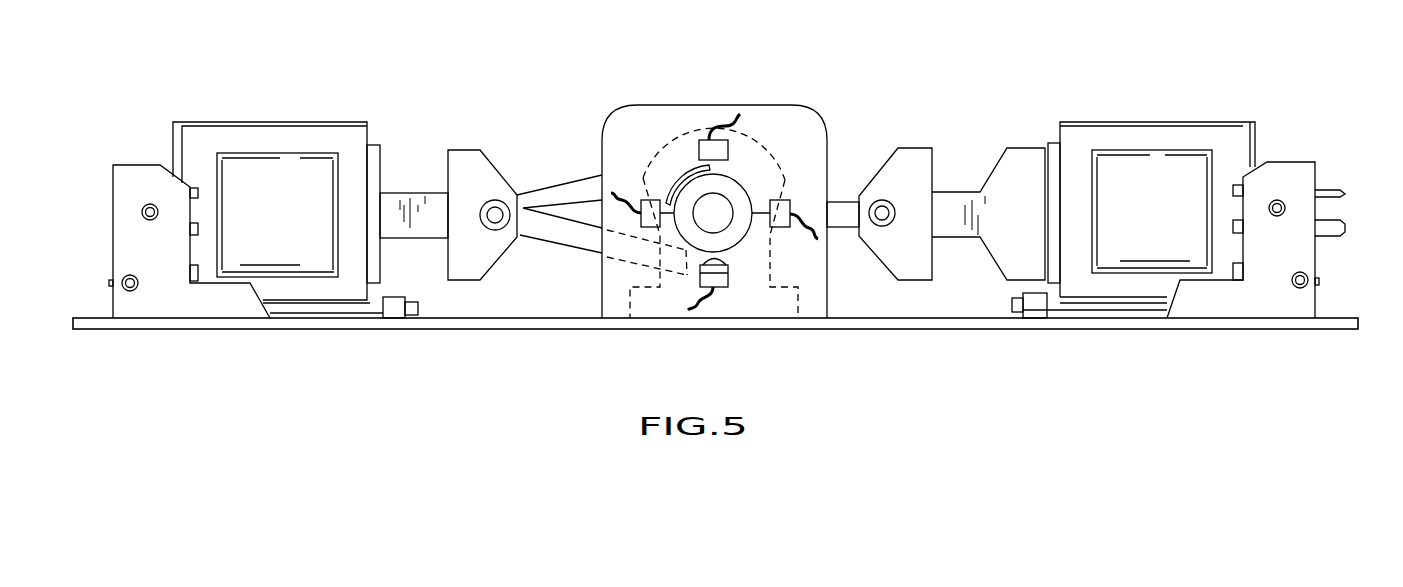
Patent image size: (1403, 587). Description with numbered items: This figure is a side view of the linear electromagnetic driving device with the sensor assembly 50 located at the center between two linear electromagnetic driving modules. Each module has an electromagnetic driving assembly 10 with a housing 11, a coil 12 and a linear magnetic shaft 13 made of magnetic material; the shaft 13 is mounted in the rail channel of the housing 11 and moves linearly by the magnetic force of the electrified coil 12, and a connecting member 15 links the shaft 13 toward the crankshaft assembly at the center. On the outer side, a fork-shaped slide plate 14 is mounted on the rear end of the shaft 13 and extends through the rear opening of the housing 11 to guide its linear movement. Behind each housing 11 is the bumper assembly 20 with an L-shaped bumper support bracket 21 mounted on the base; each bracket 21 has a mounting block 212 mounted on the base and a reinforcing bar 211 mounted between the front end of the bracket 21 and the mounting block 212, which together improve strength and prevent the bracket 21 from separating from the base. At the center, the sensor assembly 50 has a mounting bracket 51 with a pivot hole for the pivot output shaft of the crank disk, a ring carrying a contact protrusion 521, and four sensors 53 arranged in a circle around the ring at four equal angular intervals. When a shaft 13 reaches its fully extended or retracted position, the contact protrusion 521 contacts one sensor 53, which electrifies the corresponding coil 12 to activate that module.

The electromagnetic driving assembly 10 is at (725, 176).
The housing 11 is at (233, 136).
The coil 12 is at (303, 168).
The linear magnetic shaft 13 is at (410, 207).
The slide plate 14 is at (1330, 227).
The joint arm 15 is at (578, 237).
The bumper assembly 20 is at (137, 160).
The bumper support bracket 21 is at (155, 255).
The reinforcing bar 211 is at (317, 310).
The mounting block 212 is at (393, 308).
The sensor assembly 50 is at (757, 131).
The mounting bracket 51 is at (792, 125).
The contact protrusion 521 is at (680, 183).
The sensor 53 is at (708, 150).